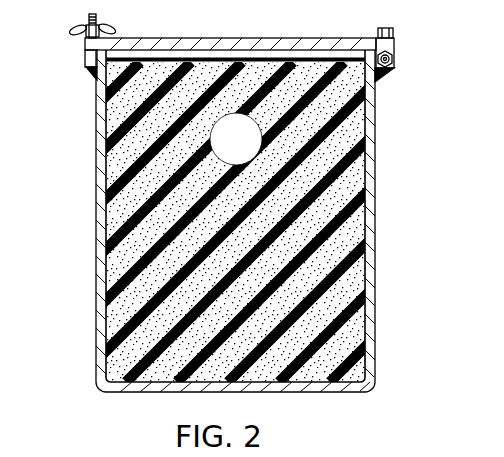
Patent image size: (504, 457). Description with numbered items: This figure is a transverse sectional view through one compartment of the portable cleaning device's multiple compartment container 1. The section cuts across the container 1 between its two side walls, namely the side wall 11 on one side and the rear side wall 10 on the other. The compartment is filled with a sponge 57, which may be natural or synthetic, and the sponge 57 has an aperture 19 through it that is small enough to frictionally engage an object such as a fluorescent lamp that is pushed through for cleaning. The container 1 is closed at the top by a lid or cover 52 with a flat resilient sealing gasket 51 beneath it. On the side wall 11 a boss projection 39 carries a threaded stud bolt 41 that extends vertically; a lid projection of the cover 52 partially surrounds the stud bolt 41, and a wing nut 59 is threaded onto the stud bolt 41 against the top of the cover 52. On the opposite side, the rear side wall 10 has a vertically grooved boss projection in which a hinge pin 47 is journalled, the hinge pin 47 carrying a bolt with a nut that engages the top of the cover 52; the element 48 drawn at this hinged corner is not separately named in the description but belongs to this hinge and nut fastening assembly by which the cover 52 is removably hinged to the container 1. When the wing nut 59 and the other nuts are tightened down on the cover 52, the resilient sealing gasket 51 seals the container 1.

The multiple compartment container 1 is at (96, 263).
The rear side wall 10 is at (375, 182).
The side wall 11 is at (97, 197).
The aperture 19 is at (312, 59).
The boss projection 39 is at (87, 58).
The threaded stud bolt 41 is at (88, 20).
The hinge pin 47 is at (393, 68).
The bolt 48 is at (394, 45).
The flat resilient sealing gasket 51 is at (205, 45).
The lid or cover 52 is at (276, 45).
The sponge 57 is at (362, 252).
The wing nut 59 is at (84, 32).